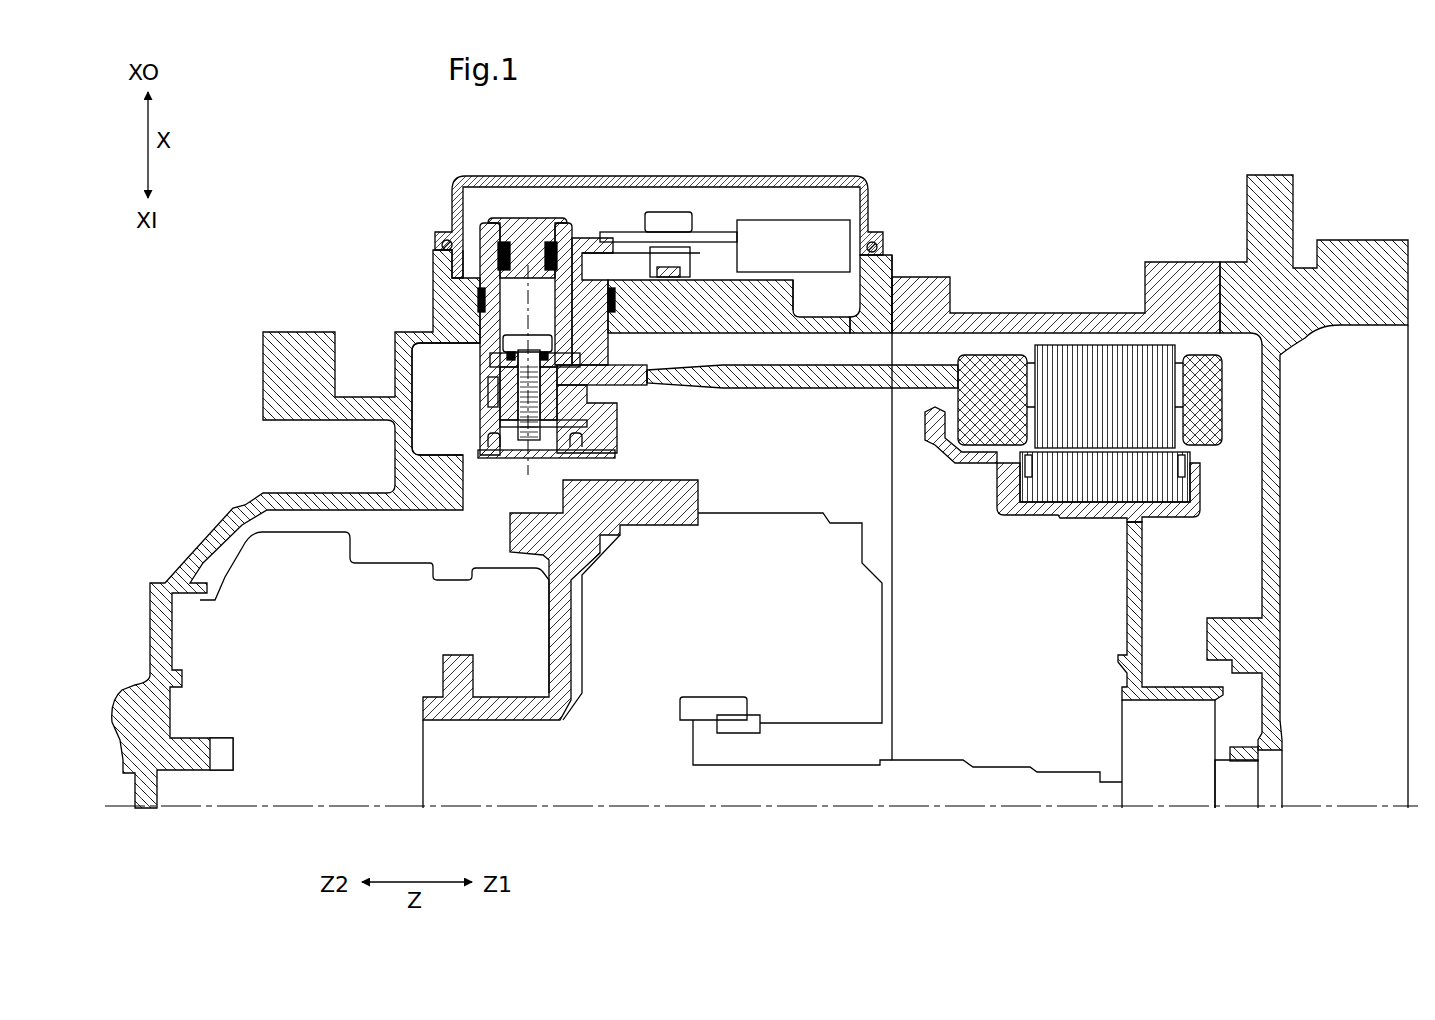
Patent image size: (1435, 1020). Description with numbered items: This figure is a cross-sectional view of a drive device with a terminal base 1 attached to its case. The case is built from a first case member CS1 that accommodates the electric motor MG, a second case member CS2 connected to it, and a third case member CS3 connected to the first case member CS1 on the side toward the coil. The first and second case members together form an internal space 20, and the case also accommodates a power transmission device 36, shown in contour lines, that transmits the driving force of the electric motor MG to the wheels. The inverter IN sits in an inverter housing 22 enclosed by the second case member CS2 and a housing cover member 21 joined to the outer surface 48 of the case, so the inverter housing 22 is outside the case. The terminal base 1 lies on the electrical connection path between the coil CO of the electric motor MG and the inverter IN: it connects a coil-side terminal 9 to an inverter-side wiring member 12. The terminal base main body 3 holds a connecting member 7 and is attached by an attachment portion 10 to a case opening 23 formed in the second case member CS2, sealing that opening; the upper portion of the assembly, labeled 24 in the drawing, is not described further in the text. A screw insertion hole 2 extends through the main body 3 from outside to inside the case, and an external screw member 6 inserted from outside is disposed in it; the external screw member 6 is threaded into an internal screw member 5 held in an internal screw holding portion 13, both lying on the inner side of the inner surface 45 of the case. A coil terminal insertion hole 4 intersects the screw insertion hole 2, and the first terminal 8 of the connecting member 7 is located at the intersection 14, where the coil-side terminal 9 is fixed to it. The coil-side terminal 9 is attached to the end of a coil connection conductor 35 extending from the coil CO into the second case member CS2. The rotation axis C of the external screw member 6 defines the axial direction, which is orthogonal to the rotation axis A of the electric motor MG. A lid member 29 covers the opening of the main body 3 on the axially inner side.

The terminal base 1 is at (560, 333).
The screw insertion hole 2 is at (515, 325).
The terminal base main body 3 is at (612, 432).
The coil terminal insertion hole 4 is at (602, 394).
The internal screw member 5 is at (550, 433).
The external screw member 6 is at (490, 428).
The connecting member 7 is at (603, 238).
The first terminal 8 is at (498, 355).
The coil-side terminal 9 is at (645, 368).
The attachment portion 10 is at (618, 322).
The inverter-side wiring member 12 is at (713, 230).
The internal screw holding portion 13 is at (492, 448).
The intersection 14 is at (496, 380).
The internal space 20 is at (872, 431).
The housing cover member 21 is at (665, 176).
The inverter housing 22 is at (620, 210).
The case opening 23 is at (478, 266).
The sensor head 24 is at (540, 216).
The lid member 29 is at (587, 460).
The coil connection conductor 35 is at (770, 392).
The power transmission device 36 is at (862, 635).
The inner surface 45 is at (730, 333).
The outer surface 48 is at (782, 262).
The inverter IN is at (822, 228).
The rotation axis C is at (584, 370).
The coil CO is at (980, 440).
The electric motor MG is at (1078, 540).
The first case member CS1 is at (1185, 275).
The second case member CS2 is at (443, 303).
The third case member CS3 is at (1365, 258).
The rotation axis A is at (945, 808).